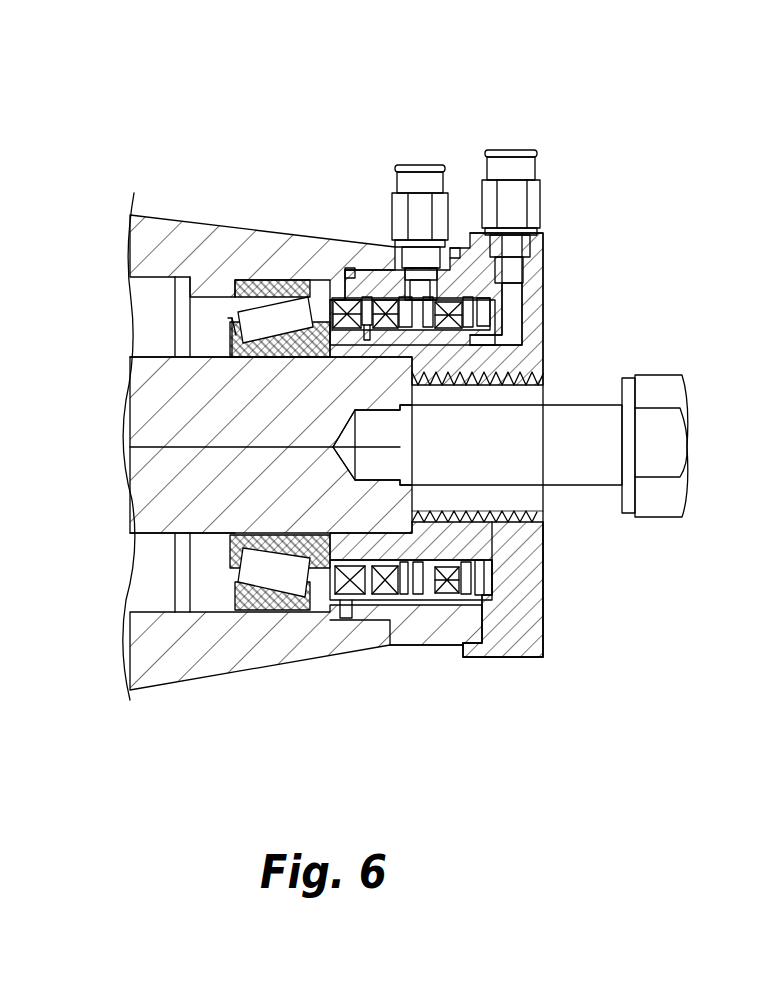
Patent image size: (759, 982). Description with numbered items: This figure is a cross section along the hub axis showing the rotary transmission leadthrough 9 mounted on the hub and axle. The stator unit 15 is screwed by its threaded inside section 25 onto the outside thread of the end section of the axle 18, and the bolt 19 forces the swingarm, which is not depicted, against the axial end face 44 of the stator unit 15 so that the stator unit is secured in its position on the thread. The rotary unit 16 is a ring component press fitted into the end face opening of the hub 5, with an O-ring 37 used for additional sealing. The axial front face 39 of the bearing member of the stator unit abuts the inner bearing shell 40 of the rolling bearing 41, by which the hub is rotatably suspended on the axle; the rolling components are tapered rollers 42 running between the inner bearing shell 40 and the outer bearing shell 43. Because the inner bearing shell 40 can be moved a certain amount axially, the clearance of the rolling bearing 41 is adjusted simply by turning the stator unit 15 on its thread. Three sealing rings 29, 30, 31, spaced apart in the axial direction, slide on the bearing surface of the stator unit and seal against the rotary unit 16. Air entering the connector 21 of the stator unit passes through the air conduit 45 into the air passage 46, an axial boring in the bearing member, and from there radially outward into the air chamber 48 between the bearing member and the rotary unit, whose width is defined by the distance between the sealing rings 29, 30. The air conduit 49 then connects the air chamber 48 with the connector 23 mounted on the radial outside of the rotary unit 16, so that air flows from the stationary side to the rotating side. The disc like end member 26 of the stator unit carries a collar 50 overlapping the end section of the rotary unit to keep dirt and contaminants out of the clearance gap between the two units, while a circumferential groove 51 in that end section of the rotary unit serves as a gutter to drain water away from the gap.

The hub 5 is at (150, 211).
The rotary transmission leadthrough 9 is at (584, 216).
The stator unit 15 is at (516, 668).
The rotary unit 16 is at (448, 665).
The axle 18 is at (200, 497).
The bolt 19 is at (575, 455).
The connector 21 is at (550, 190).
The connector 23 is at (400, 165).
The threaded inside section 25 is at (492, 512).
The disc like end member 26 is at (530, 620).
The sealing ring 29 is at (445, 598).
The sealing ring 30 is at (382, 593).
The sealing ring 31 is at (340, 596).
The O-ring 37 is at (355, 264).
The axial front face 39 is at (326, 548).
The inner bearing shell 40 is at (262, 355).
The rolling bearing 41 is at (222, 318).
The tapered rollers 42 is at (295, 332).
The outer bearing shell 43 is at (279, 261).
The axial end face 44 is at (550, 568).
The air conduit 45 is at (520, 312).
The air passage 46 is at (448, 343).
The air chamber 48 is at (408, 330).
The air conduit 49 is at (430, 290).
The collar 50 is at (470, 664).
The circumferential groove 51 is at (458, 250).